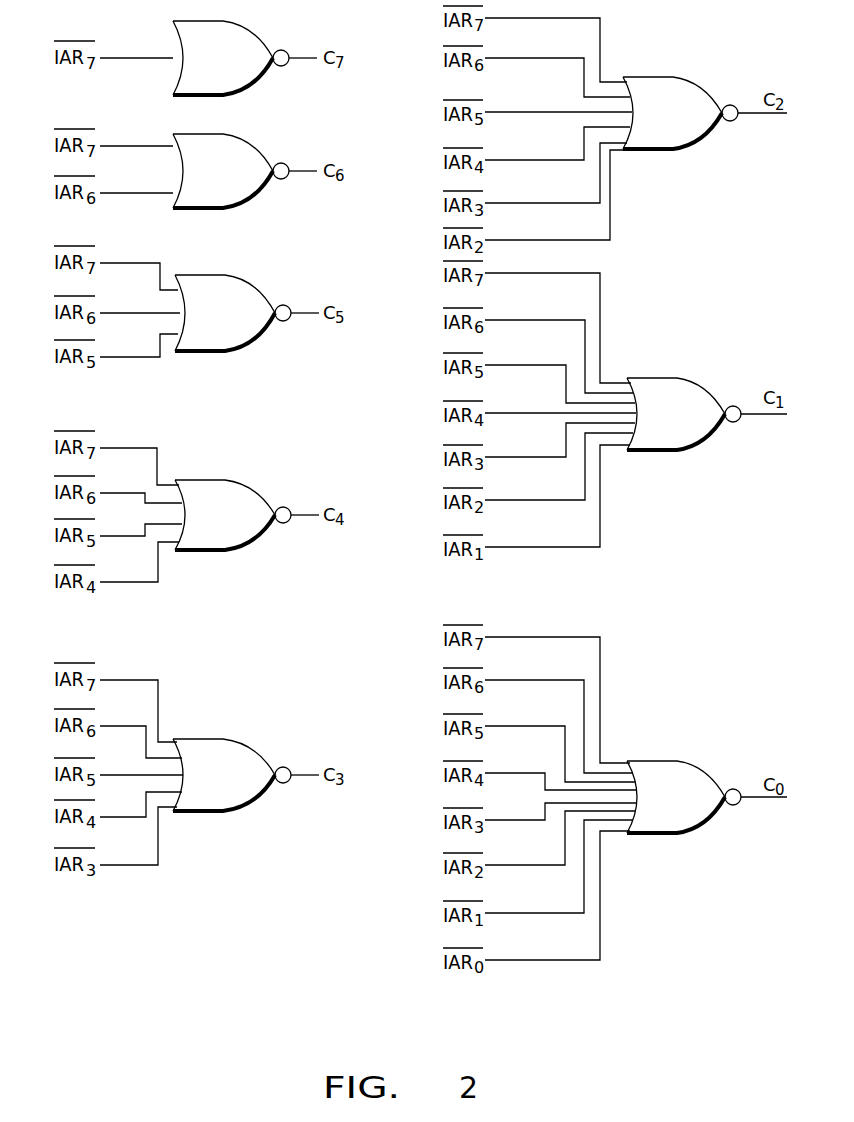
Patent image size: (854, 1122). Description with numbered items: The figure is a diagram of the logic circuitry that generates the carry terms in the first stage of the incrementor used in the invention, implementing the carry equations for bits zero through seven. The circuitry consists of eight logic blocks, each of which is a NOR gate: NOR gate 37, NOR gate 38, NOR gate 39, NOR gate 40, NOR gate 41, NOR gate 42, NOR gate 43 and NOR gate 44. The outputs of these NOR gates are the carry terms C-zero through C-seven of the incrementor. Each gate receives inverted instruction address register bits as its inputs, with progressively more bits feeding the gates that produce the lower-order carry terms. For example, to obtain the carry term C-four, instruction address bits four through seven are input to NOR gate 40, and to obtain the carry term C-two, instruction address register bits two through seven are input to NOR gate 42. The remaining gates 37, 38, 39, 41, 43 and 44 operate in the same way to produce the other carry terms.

The NOR gate 37 is at (223, 67).
The NOR gate 38 is at (223, 173).
The NOR gate 39 is at (225, 321).
The NOR gate 40 is at (225, 523).
The NOR gate 41 is at (225, 785).
The NOR gate 42 is at (676, 113).
The NOR gate 43 is at (676, 422).
The NOR gate 44 is at (676, 808).